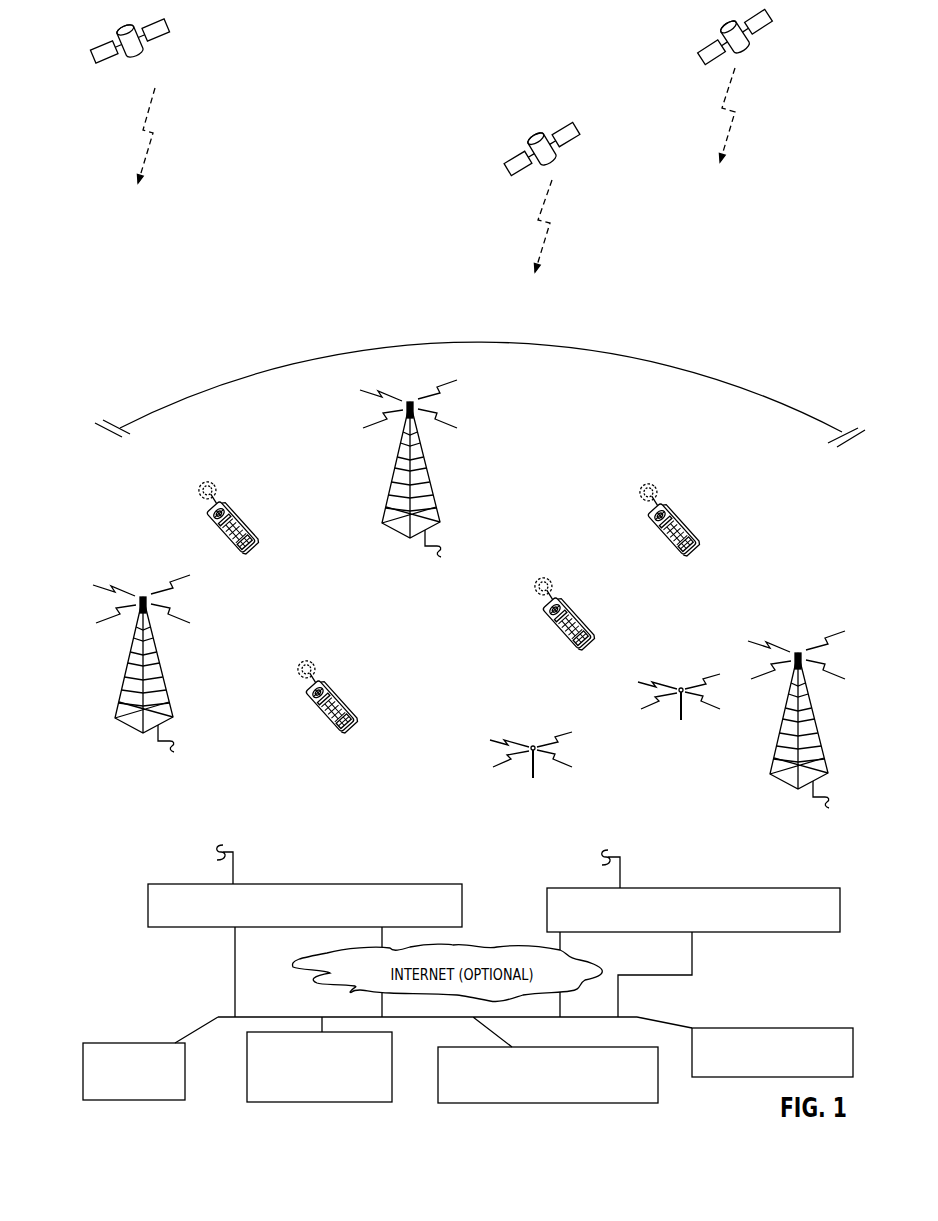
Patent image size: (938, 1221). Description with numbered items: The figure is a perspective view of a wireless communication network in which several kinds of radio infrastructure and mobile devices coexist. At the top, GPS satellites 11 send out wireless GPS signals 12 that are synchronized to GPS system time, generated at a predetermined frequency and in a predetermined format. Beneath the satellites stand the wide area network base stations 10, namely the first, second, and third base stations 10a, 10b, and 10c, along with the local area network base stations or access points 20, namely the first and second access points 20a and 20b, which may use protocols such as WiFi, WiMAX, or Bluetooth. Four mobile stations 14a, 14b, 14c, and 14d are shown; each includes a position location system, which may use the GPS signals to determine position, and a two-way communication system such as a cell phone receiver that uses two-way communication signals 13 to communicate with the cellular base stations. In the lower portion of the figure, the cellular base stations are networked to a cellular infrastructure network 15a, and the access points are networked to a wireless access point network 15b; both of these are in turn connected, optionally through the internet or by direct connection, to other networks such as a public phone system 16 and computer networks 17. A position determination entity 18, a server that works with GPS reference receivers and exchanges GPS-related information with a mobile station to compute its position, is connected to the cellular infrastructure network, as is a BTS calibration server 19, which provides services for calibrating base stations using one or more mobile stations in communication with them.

The wide area network base stations 10 is at (160, 864).
The first base station 10a is at (172, 688).
The second base station 10b is at (440, 502).
The third base station 10c is at (825, 743).
The GPS satellites 11 is at (513, 52).
The wireless GPS signals 12 is at (167, 170).
The two-way communication signals 13 is at (440, 382).
The first mobile station 14a is at (252, 502).
The second mobile station 14b is at (340, 688).
The third mobile station 14c is at (585, 608).
The fourth mobile station 14d is at (688, 510).
The cellular infrastructure network 15a is at (288, 905).
The wireless access point network 15b is at (677, 910).
The public phone system 16 is at (134, 1062).
The computer networks 17 is at (307, 1066).
The position determination entity 18 is at (536, 1075).
The BTS calibration server 19 is at (772, 1043).
The local area network base stations (access points) 20 is at (574, 869).
The first access point 20a is at (533, 733).
The second access point 20b is at (682, 678).